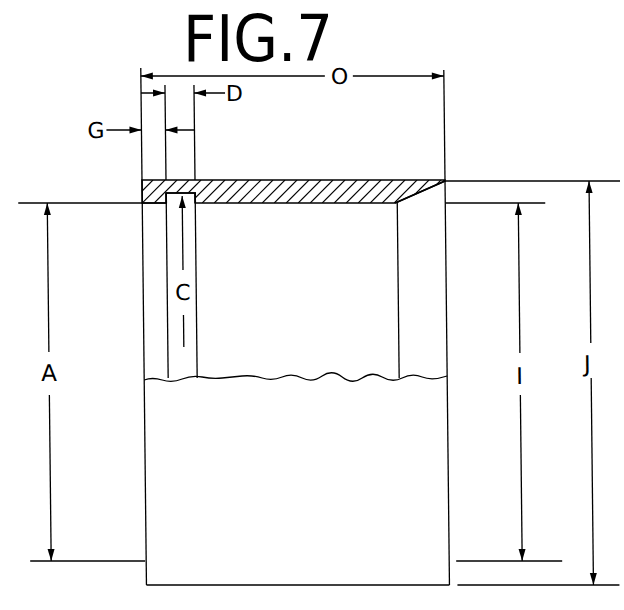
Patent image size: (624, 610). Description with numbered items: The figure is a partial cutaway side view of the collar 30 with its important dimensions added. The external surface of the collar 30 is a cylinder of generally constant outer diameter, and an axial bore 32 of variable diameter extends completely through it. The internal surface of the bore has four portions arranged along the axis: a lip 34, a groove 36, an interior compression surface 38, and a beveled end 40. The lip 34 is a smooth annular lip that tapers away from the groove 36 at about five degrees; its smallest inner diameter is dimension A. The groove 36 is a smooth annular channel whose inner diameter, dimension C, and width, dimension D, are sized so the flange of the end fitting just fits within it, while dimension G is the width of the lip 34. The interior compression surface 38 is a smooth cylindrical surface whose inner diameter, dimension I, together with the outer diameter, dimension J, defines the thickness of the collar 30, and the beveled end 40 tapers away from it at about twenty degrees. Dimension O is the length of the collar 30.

The collar 30 is at (271, 313).
The axial bore 32 is at (352, 322).
The lip 34 is at (157, 206).
The groove 36 is at (168, 206).
The interior compression surface 38 is at (320, 205).
The beveled end 40 is at (420, 206).